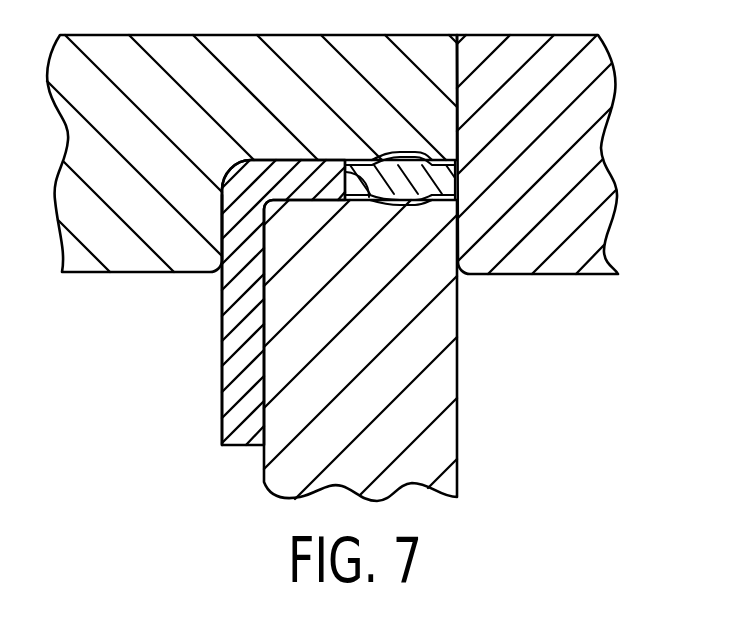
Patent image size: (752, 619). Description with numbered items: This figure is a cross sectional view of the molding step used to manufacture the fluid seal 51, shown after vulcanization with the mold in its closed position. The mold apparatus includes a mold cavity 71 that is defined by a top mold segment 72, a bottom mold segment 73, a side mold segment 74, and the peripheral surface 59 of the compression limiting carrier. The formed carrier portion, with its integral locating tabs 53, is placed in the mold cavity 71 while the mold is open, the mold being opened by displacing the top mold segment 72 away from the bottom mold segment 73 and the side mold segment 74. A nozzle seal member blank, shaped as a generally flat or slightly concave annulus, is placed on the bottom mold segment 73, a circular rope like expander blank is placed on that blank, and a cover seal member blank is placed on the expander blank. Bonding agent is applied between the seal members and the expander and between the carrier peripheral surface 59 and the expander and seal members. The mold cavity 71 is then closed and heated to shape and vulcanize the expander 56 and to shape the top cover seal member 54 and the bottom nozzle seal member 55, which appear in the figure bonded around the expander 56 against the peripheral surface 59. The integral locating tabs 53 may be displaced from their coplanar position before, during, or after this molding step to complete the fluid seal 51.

The top mold segment 72 is at (198, 102).
The side mold segment 74 is at (587, 143).
The bottom mold segment 73 is at (357, 347).
The fluid seal 51 is at (222, 303).
The locating tabs 53 is at (222, 337).
The mold cavity 71 is at (360, 162).
The top cover seal member 54 is at (443, 161).
The bottom nozzle seal member 55 is at (441, 205).
The expander 56 is at (408, 205).
The peripheral surface 59 is at (362, 202).